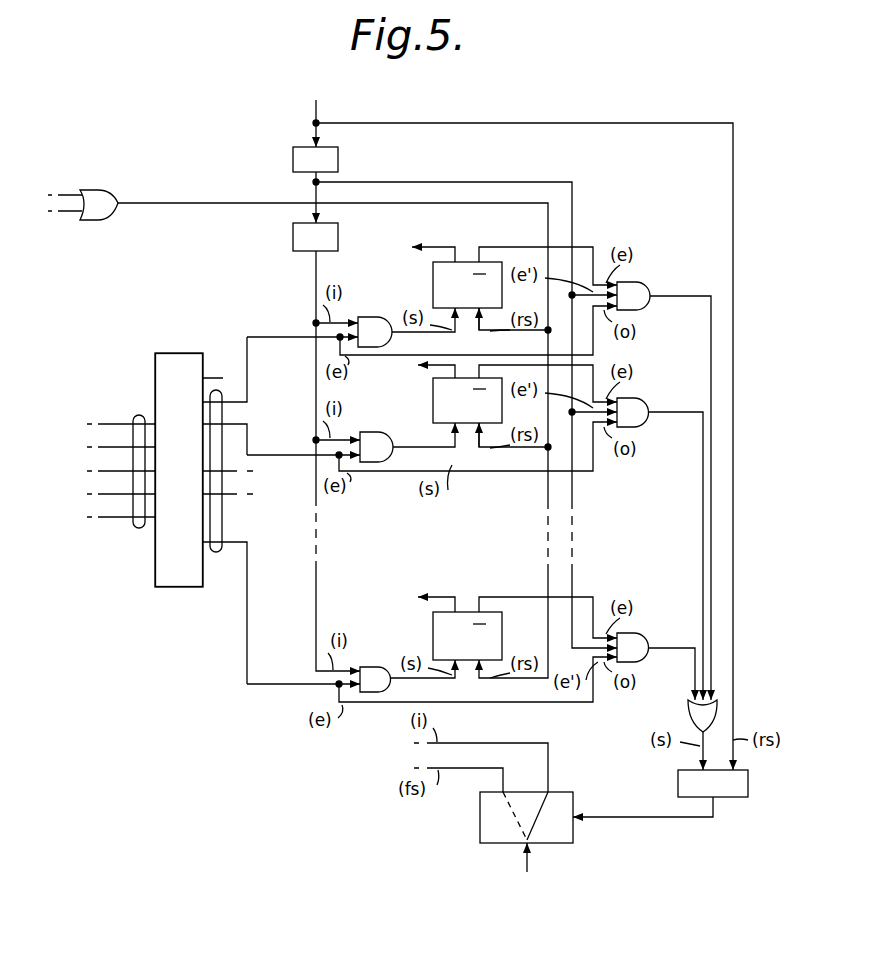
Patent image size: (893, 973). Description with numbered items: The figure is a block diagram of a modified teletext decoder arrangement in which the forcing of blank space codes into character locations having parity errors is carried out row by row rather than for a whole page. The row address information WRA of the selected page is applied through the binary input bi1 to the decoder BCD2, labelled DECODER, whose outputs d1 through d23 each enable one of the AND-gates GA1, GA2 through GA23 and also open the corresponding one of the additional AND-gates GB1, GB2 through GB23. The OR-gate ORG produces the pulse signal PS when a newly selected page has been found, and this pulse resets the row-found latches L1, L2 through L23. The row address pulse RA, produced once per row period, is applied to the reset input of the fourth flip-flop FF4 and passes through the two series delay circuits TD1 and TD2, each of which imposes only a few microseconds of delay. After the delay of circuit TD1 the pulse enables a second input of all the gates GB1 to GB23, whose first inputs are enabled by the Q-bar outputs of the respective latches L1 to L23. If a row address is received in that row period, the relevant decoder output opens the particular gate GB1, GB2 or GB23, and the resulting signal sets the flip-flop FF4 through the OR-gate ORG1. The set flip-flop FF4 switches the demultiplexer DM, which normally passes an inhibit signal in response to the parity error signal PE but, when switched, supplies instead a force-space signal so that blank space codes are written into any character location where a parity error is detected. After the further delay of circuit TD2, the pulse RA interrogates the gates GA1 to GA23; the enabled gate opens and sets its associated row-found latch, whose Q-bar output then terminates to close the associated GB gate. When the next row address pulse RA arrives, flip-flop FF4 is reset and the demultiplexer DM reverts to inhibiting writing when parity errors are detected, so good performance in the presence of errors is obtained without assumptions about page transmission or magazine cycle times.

The row address pulse RA is at (313, 103).
The delay circuit TD1 is at (455, 397).
The delay circuit TD2 is at (326, 447).
The OR-gate ORG is at (97, 197).
The pulse signal PS is at (247, 203).
The decoder DECODER is at (165, 380).
The decoder BCD2 is at (181, 363).
The binary input bi1 is at (139, 417).
The row address information WRA is at (80, 440).
The decoder outputs d1 is at (216, 552).
The AND-gate GA1 is at (378, 325).
The AND-gate GA2 is at (403, 419).
The AND-gate GA23 is at (398, 652).
The row-found latch L1 is at (430, 275).
The row-found latch L2 is at (430, 391).
The row-found latch L23 is at (432, 625).
The AND-gate GB1 is at (640, 292).
The AND-gate GB2 is at (640, 408).
The AND-gate GB23 is at (638, 643).
The OR-gate ORG1 is at (695, 715).
The fourth flip-flop FF4 is at (660, 793).
The demultiplexer DM is at (560, 795).
The parity error signal PE is at (530, 868).